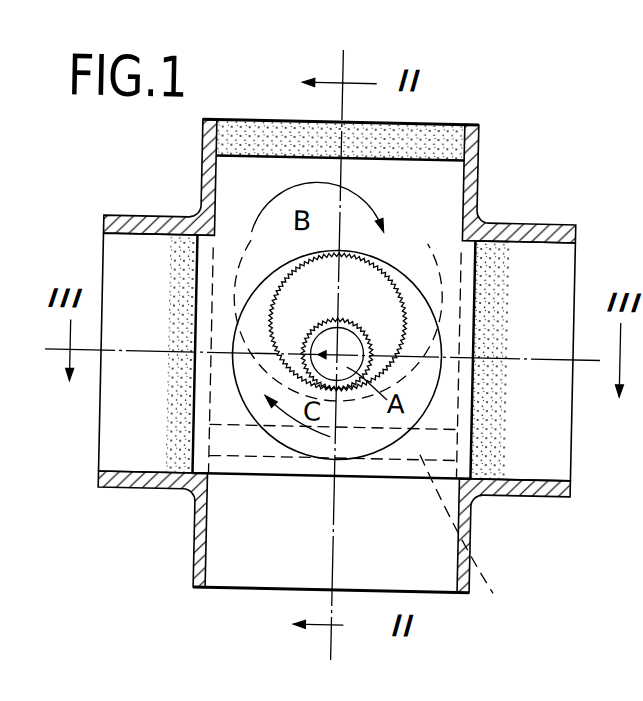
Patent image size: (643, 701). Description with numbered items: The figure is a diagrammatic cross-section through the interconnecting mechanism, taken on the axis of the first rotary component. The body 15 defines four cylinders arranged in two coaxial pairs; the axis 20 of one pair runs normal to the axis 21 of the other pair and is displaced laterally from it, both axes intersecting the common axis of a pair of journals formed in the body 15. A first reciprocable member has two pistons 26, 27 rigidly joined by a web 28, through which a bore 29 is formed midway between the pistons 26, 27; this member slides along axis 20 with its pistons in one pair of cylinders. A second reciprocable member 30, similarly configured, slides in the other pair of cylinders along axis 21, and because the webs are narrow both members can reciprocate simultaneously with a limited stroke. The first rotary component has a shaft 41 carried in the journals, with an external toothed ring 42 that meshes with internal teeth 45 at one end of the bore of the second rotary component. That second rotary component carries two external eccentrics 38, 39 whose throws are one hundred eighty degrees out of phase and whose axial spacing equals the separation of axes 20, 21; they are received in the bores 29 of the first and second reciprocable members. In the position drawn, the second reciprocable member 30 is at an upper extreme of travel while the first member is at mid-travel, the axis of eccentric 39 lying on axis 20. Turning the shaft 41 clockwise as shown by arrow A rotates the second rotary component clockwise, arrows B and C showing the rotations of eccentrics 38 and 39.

The body 15 is at (201, 561).
The axis 20 is at (334, 170).
The axis 21 is at (113, 355).
The piston 26 is at (425, 128).
The piston 27 is at (509, 439).
The web 28 is at (438, 173).
The bore 29 is at (279, 222).
The second reciprocable member 30 is at (514, 253).
The external eccentric 38 is at (400, 221).
The external eccentric 39 is at (259, 407).
The shaft 41 is at (345, 341).
The external toothed ring 42 is at (317, 328).
The internal teeth 45 is at (395, 291).